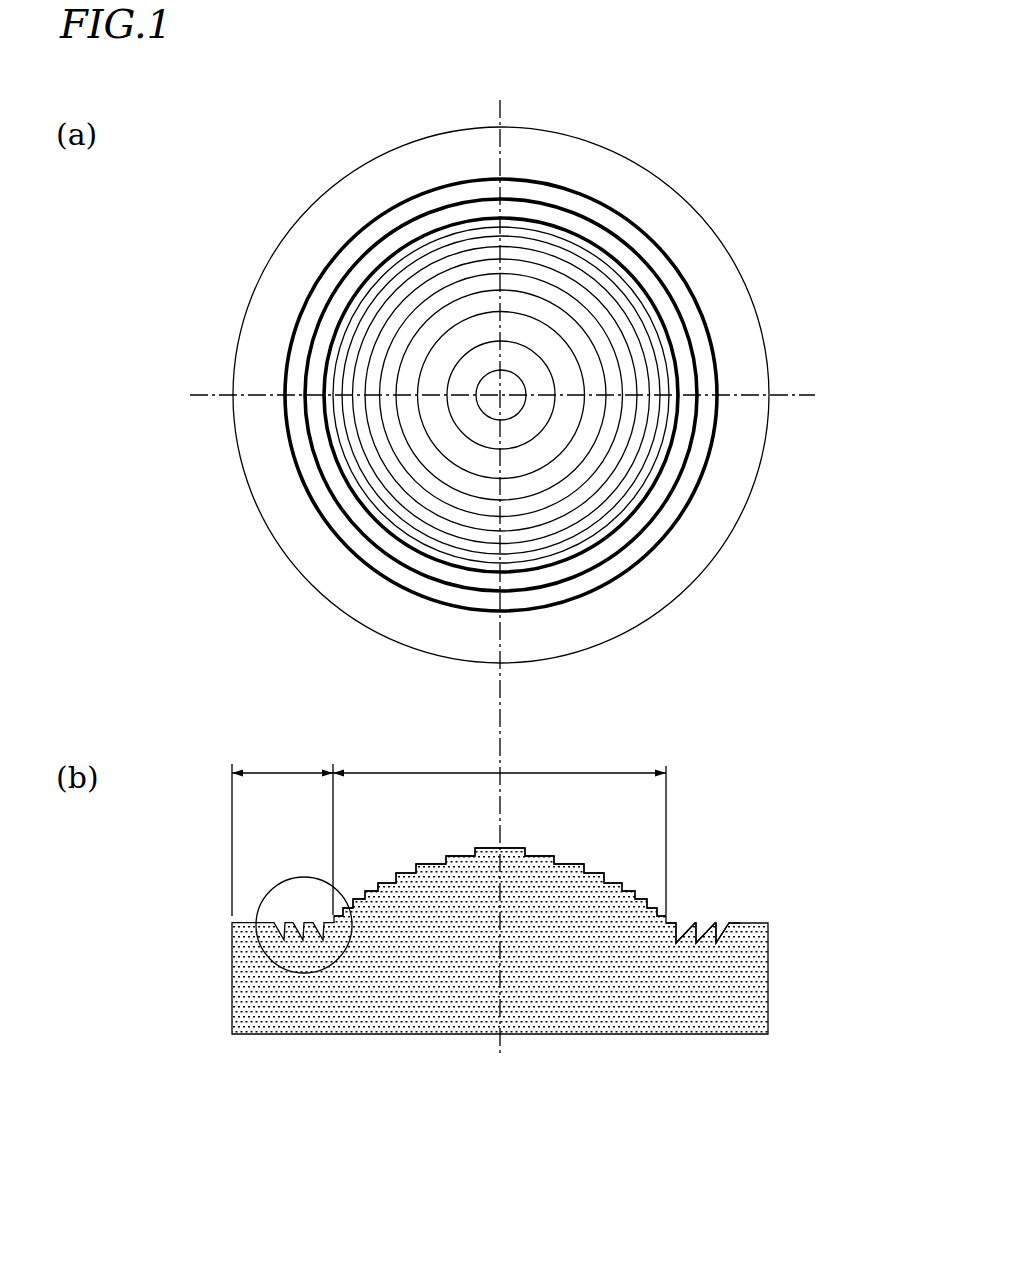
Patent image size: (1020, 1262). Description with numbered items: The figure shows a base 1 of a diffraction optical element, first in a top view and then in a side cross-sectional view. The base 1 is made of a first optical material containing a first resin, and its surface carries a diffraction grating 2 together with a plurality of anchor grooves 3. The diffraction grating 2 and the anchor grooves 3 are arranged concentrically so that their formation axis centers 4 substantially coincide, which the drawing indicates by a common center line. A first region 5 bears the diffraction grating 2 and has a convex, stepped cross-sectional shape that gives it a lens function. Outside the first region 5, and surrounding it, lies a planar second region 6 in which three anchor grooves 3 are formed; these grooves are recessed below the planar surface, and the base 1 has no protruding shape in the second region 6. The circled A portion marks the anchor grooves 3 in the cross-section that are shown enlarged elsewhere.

The base 1 is at (661, 210).
The diffraction grating 2 is at (531, 829).
The anchor grooves 3 is at (668, 950).
The formation axis centers 4 is at (502, 595).
The first region 5 is at (499, 827).
The second region 6 is at (282, 828).
The A portion A is at (301, 877).